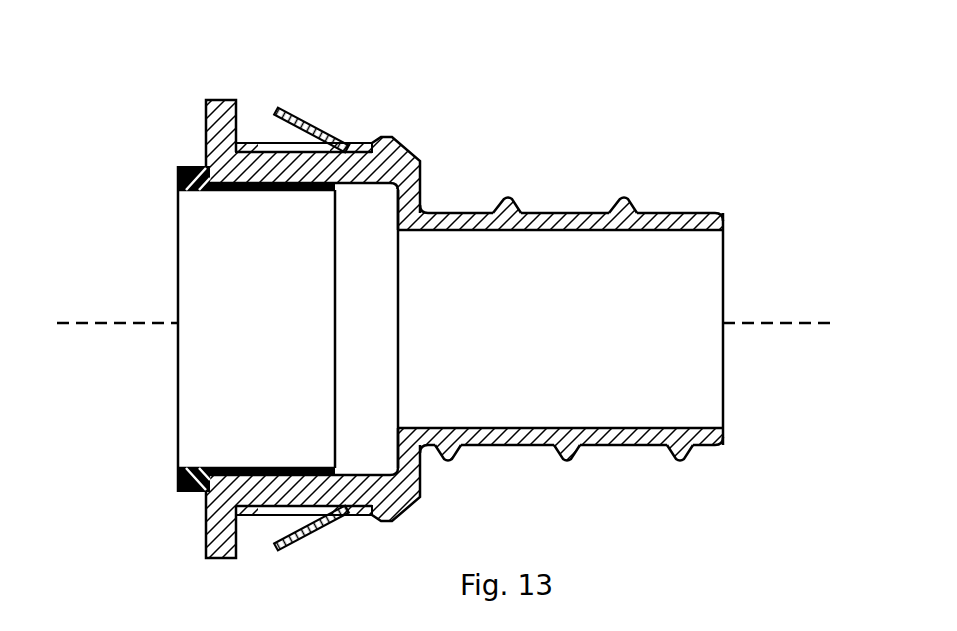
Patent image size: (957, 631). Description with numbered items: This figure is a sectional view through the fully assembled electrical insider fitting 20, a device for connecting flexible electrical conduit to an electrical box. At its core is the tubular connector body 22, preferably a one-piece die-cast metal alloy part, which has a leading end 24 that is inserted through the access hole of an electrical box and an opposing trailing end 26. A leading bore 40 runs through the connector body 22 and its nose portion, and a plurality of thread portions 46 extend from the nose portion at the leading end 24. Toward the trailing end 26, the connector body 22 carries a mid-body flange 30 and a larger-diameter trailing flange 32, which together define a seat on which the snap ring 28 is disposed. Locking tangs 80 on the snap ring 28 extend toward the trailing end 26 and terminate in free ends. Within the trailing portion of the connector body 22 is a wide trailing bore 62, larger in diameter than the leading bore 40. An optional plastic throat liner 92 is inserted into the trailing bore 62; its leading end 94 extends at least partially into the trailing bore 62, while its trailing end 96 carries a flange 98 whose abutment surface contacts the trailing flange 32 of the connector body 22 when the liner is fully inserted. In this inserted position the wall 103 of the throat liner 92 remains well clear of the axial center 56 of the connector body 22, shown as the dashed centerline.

The electrical insider fitting 20 is at (92, 118).
The connector body 22 is at (617, 445).
The leading end 24 is at (723, 268).
The trailing end 26 is at (206, 138).
The snap ring 28 is at (358, 516).
The mid-body flange 30 is at (385, 137).
The trailing flange 32 is at (221, 100).
The leading bore 40 is at (560, 329).
The thread portions 46 is at (623, 210).
The axial center 56 is at (776, 326).
The trailing bore 62 is at (375, 329).
The locking tangs 80 is at (304, 120).
The throat liner 92 is at (256, 329).
The leading end 94 is at (336, 324).
The trailing end 96 is at (178, 285).
The flange 98 is at (179, 492).
The wall 103 is at (262, 190).